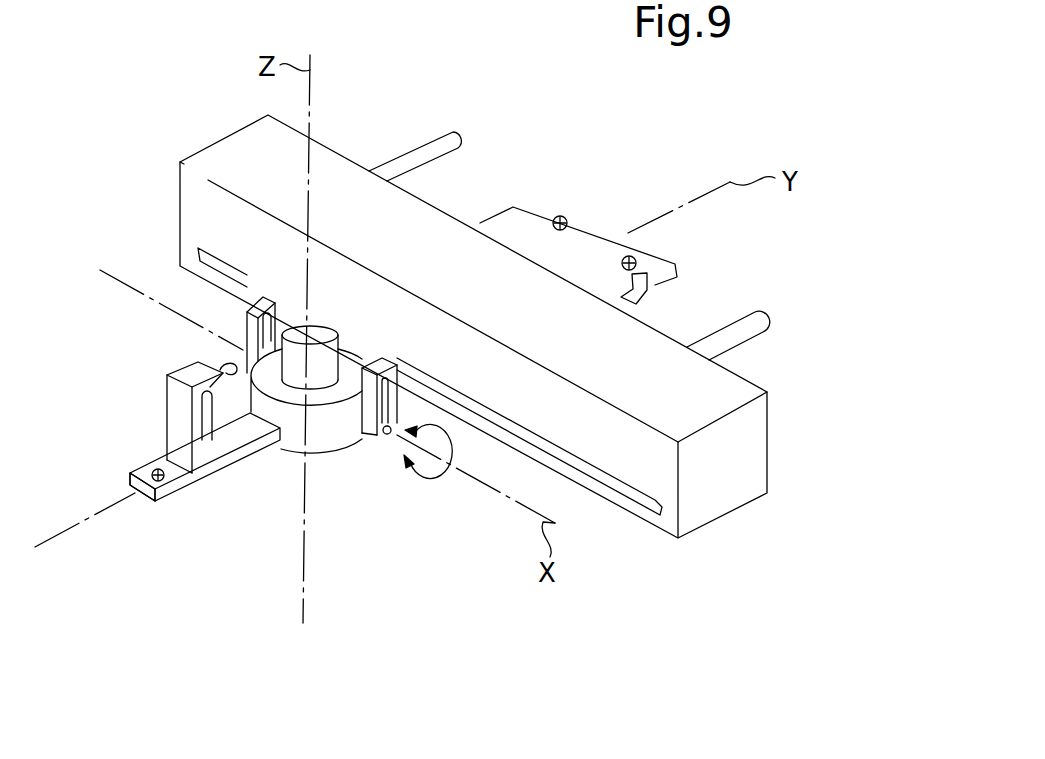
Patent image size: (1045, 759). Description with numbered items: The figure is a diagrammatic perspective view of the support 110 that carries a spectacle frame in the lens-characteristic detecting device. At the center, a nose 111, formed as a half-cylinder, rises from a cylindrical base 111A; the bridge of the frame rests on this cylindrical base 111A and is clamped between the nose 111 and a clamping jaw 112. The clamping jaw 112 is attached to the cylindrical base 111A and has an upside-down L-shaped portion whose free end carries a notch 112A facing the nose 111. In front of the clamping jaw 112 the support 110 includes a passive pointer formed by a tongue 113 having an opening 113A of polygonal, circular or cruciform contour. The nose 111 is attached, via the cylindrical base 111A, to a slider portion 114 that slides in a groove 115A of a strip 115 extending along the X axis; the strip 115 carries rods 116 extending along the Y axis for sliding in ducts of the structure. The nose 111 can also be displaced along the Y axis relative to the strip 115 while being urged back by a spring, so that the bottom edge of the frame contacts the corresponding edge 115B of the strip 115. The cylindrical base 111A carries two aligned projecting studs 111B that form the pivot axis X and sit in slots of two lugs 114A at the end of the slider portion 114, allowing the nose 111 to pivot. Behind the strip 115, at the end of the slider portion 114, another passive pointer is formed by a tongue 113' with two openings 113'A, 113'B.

The support 110 is at (439, 533).
The nose 111 is at (302, 352).
The cylindrical base 111A is at (322, 440).
The projecting studs 111B is at (388, 440).
The clamping jaw 112 is at (237, 457).
The notch 112A is at (193, 363).
The tongue 113 is at (156, 520).
The opening 113A is at (160, 472).
The tongue 113' is at (578, 224).
The opening 113'A is at (538, 180).
The opening 113'B is at (700, 246).
The slider portion 114 is at (648, 280).
The lugs 114A is at (393, 381).
The strip 115 is at (737, 492).
The groove 115A is at (650, 517).
The edge 115B is at (643, 433).
The rods 116 is at (442, 140).